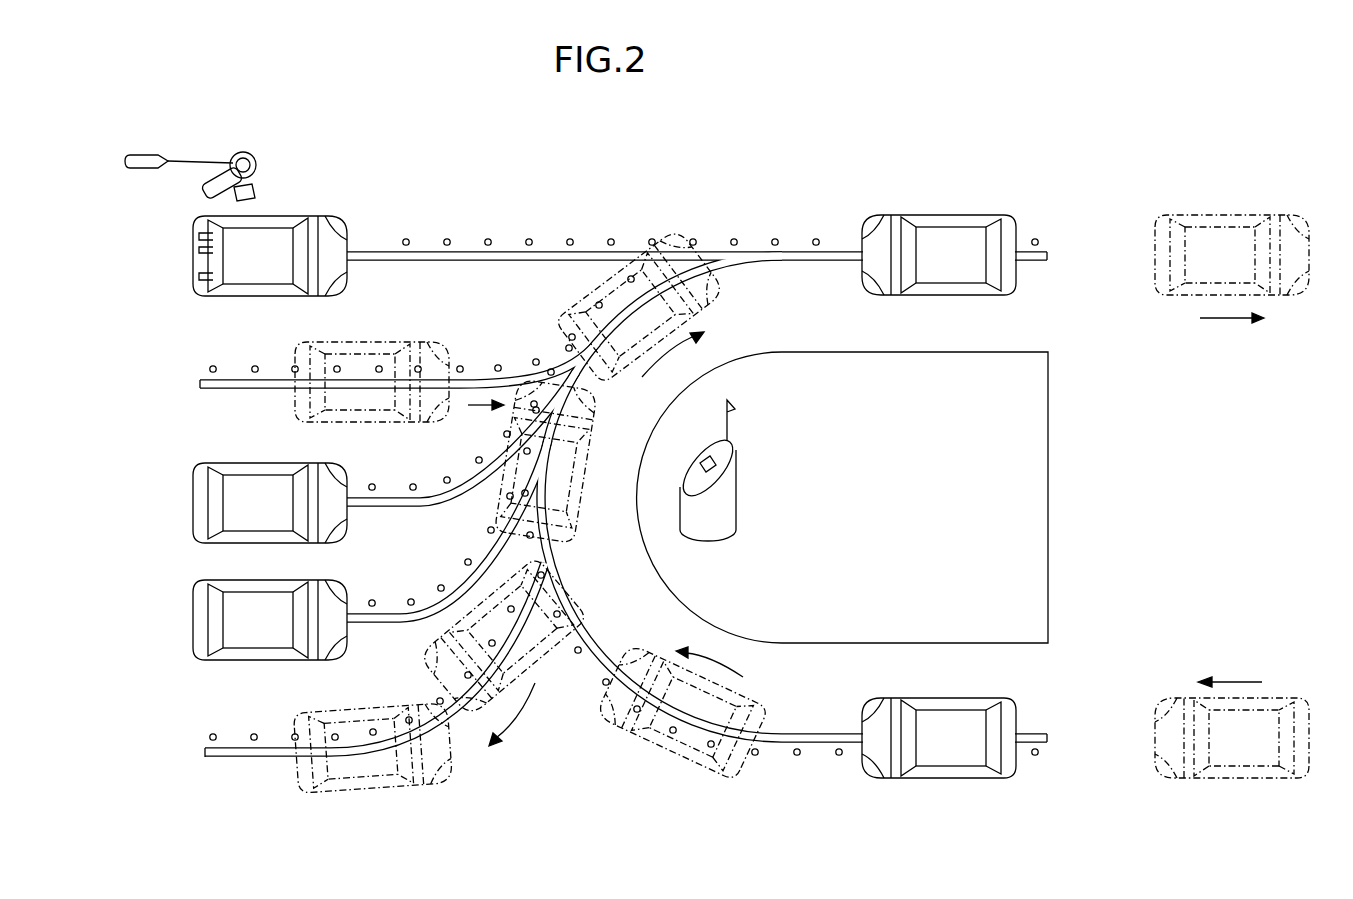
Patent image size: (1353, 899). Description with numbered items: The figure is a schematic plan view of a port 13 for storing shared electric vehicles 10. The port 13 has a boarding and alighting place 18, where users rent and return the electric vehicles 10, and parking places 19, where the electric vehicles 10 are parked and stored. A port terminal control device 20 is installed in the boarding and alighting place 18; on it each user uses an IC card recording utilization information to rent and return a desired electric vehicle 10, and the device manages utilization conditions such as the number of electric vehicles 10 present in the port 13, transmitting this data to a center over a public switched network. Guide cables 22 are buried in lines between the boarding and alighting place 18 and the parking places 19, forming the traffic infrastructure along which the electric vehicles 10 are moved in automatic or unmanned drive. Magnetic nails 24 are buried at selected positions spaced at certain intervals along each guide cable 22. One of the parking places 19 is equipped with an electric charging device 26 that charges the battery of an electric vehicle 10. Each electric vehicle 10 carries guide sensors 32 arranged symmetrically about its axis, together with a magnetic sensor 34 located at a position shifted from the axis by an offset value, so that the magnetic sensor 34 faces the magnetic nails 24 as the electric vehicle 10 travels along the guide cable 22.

The electric vehicle 10 is at (751, 501).
The port 13 is at (843, 165).
The boarding and alighting place 18 is at (1048, 494).
The parking place 19 is at (170, 530).
The port terminal control device 20 is at (738, 494).
The guide cable 22 is at (528, 262).
The magnetic nail 24 is at (405, 238).
The electric charging device 26 is at (258, 160).
The guide sensor 32 is at (193, 236).
The magnetic sensor 34 is at (193, 250).